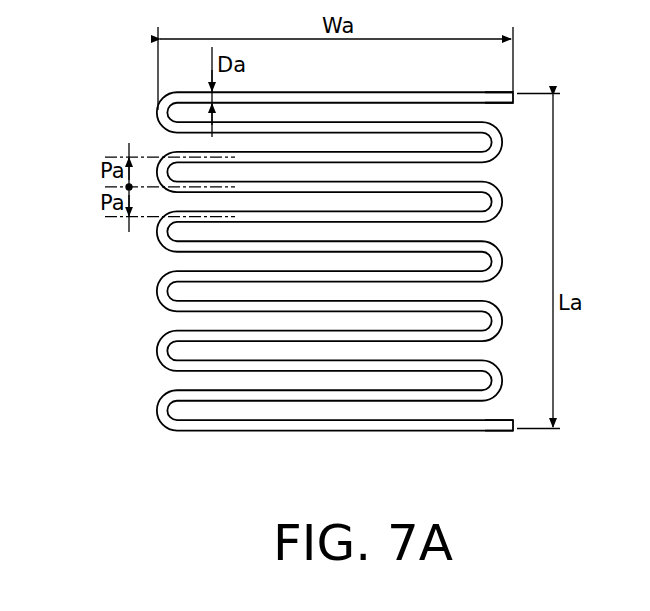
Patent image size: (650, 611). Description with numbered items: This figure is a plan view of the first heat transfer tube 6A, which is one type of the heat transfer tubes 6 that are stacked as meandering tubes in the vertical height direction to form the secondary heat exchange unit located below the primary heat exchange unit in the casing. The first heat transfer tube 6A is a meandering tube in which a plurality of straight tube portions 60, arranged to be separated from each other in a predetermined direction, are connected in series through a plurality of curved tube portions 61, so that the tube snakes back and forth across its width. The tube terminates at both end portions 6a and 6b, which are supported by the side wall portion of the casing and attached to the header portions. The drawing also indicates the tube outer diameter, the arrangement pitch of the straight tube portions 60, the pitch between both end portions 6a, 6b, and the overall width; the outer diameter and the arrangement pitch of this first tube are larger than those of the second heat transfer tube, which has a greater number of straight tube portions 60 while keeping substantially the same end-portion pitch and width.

The first heat transfer tube 6A is at (118, 50).
The heat transfer tube 6 is at (299, 256).
The straight tube portion 60 is at (334, 155).
The curved tube portion 61 is at (498, 152).
The end portion 6a is at (505, 419).
The end portion 6b is at (503, 104).